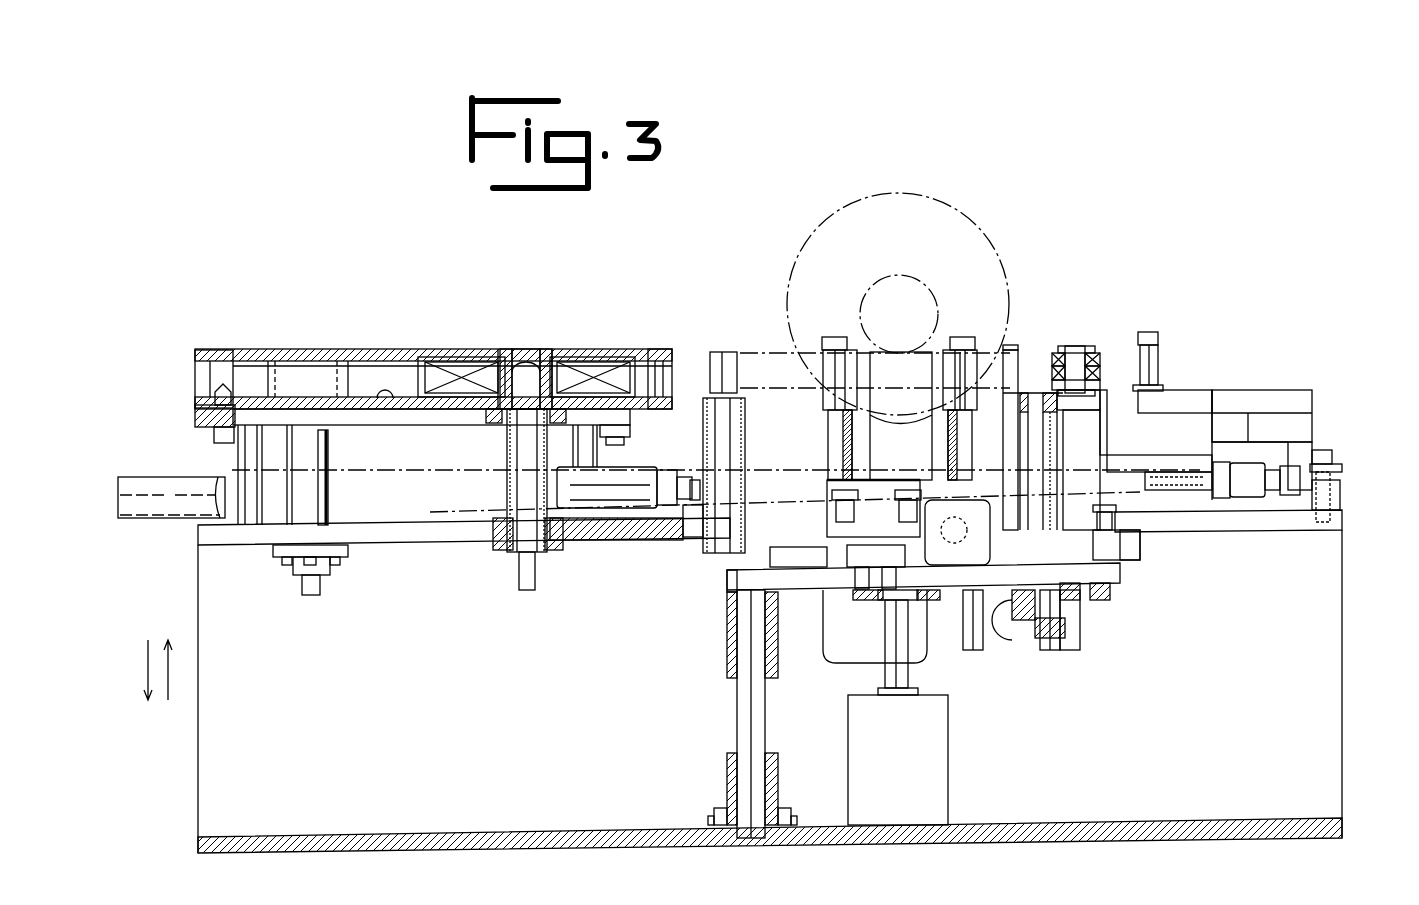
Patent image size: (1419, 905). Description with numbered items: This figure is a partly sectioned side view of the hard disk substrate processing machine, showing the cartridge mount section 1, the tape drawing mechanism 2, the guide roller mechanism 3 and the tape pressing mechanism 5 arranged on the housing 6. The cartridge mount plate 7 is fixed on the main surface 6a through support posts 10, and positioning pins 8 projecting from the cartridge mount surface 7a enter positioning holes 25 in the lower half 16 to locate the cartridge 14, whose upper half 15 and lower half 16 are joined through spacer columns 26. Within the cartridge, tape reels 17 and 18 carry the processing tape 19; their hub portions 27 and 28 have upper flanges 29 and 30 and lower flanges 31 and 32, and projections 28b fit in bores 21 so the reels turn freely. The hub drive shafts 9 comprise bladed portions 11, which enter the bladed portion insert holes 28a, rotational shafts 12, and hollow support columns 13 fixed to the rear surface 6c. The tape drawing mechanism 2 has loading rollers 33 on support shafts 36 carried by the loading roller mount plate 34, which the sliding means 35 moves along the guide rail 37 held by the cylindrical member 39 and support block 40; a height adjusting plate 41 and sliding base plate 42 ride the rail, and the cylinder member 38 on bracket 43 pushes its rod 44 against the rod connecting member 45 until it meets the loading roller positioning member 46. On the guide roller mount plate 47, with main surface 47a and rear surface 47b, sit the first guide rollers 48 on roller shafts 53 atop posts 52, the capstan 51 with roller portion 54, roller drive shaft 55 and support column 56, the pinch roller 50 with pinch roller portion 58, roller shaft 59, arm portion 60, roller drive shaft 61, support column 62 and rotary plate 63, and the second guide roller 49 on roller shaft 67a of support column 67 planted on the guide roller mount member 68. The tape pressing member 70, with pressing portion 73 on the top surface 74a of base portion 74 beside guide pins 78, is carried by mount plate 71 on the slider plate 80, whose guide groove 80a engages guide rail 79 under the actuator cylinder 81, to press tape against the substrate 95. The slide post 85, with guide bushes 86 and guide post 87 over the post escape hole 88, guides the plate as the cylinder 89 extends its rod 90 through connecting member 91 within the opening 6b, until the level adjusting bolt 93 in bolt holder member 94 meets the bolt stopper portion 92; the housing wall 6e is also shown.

The cartridge mount section 1 is at (196, 426).
The tape drawing mechanism 2 is at (1310, 398).
The guide roller mechanism 3 is at (727, 580).
The tape pressing mechanism 5 is at (868, 350).
The housing 6 is at (200, 536).
The main surface 6a is at (408, 540).
The opening 6b is at (1130, 555).
The rear surface 6c is at (468, 545).
The frame bottom plate 6e is at (220, 837).
The cartridge mount plate 7 is at (200, 422).
The cartridge mount surface 7a is at (405, 415).
The positioning pins 8 is at (215, 394).
The hub drive shafts 9 is at (508, 460).
The support posts 10 is at (240, 460).
The bladed portions 11 is at (528, 375).
The rotational shafts 12 is at (525, 588).
The hollow support columns 13 is at (507, 486).
The cartridge 14 is at (196, 352).
The upper half 15 is at (240, 350).
The lower half 16 is at (196, 405).
The tape reel 17 is at (318, 366).
The tape reel 18 is at (568, 368).
The processing tape 19 is at (437, 362).
The bore 21 is at (550, 362).
The positioning hole 25 is at (218, 437).
The spacer columns 26 is at (200, 360).
The hub portion 27 is at (276, 362).
The hub portion 28 is at (503, 352).
The bladed portion insert hole 28a is at (515, 365).
The projections 28b is at (503, 349).
The upper flange 29 is at (222, 350).
The upper flange 30 is at (386, 394).
The lower flange 31 is at (405, 410).
The lower flange 32 is at (630, 409).
The loading rollers 33 is at (1158, 362).
The loading roller mount plate 34 is at (1180, 400).
The sliding means 35 is at (1145, 462).
The support shafts 36 is at (1148, 332).
The guide rail 37 is at (1188, 470).
The cylinder member 38 is at (610, 505).
The cylindrical member 39 is at (690, 515).
The support block 40 is at (1210, 500).
The height adjusting plate 41 is at (1230, 420).
The sliding base plate 42 is at (1270, 450).
The bracket 43 is at (665, 525).
The rod 44 is at (1258, 500).
The rod connecting member 45 is at (1310, 532).
The loading roller positioning member 46 is at (1335, 490).
The guide roller mount plate 47 is at (800, 590).
The main surface 47a is at (1080, 600).
The rear surface 47b is at (1100, 602).
The first guide rollers 48 is at (825, 378).
The second guide roller 49 is at (1012, 360).
The pinch roller 50 is at (1092, 352).
The capstan 51 is at (725, 360).
The posts 52 is at (830, 410).
The roller shafts 53 is at (822, 342).
The roller portion 54 is at (720, 377).
The roller drive shaft 55 is at (718, 418).
The support column 56 is at (710, 444).
The pinch roller portion 58 is at (1100, 385).
The roller shaft 59 is at (1058, 352).
The arm portion 60 is at (1080, 403).
The roller drive shaft 61 is at (1046, 632).
The support column 62 is at (1075, 445).
The rotary plate 63 is at (1066, 632).
The support column 67 is at (1020, 438).
The roller shaft 67a is at (1020, 390).
The guide roller mount member 68 is at (997, 620).
The tape pressing member 70 is at (925, 350).
The mount plate 71 is at (830, 515).
The pressing portion 73 is at (870, 432).
The base portion 74 is at (835, 495).
The top surface 74a is at (840, 480).
The guide pins 78 is at (945, 355).
The guide rail 79 is at (848, 590).
The slider plate 80 is at (837, 564).
The guide groove 80a is at (840, 590).
The actuator cylinder 81 is at (960, 570).
The slide post 85 is at (727, 624).
The guide bushes 86 is at (727, 656).
The guide post 87 is at (745, 710).
The post escape hole 88 is at (737, 838).
The cylinder 89 is at (892, 800).
The rod 90 is at (885, 676).
The connecting member 91 is at (880, 603).
The bolt stopper portion 92 is at (1122, 560).
The level adjusting bolt 93 is at (1097, 525).
The bolt holder member 94 is at (1140, 545).
The substrate 95 is at (940, 225).